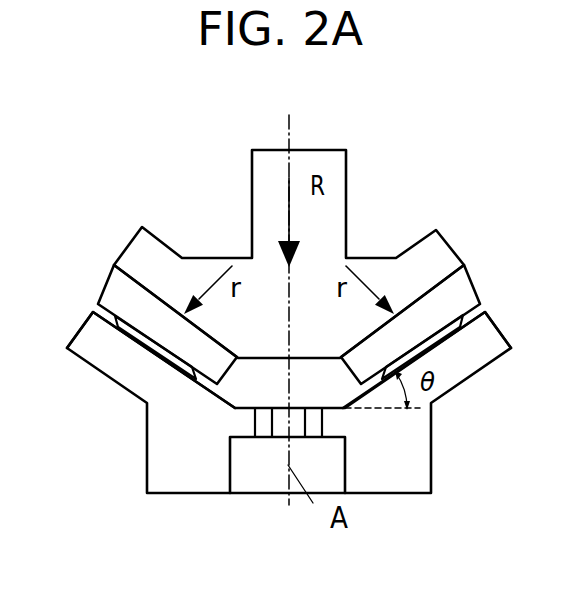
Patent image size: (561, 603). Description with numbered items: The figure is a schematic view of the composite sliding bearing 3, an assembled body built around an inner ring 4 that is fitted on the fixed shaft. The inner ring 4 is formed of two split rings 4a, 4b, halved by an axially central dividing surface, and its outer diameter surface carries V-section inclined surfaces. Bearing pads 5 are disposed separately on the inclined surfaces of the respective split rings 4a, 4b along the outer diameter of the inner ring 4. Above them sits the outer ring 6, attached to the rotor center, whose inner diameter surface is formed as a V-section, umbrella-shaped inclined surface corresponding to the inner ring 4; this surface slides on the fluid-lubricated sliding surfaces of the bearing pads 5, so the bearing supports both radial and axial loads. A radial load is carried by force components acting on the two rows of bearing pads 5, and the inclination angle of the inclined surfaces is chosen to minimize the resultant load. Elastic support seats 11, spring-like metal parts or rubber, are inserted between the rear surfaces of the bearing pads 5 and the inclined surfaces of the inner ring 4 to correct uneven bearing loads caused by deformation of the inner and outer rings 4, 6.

The composite sliding bearing 3 is at (233, 128).
The inner ring 4 is at (291, 405).
The split ring 4a is at (160, 390).
The split ring 4b is at (457, 363).
The bearing pad 5 is at (128, 310).
The outer ring 6 is at (275, 283).
The elastic support seat 11 is at (145, 346).